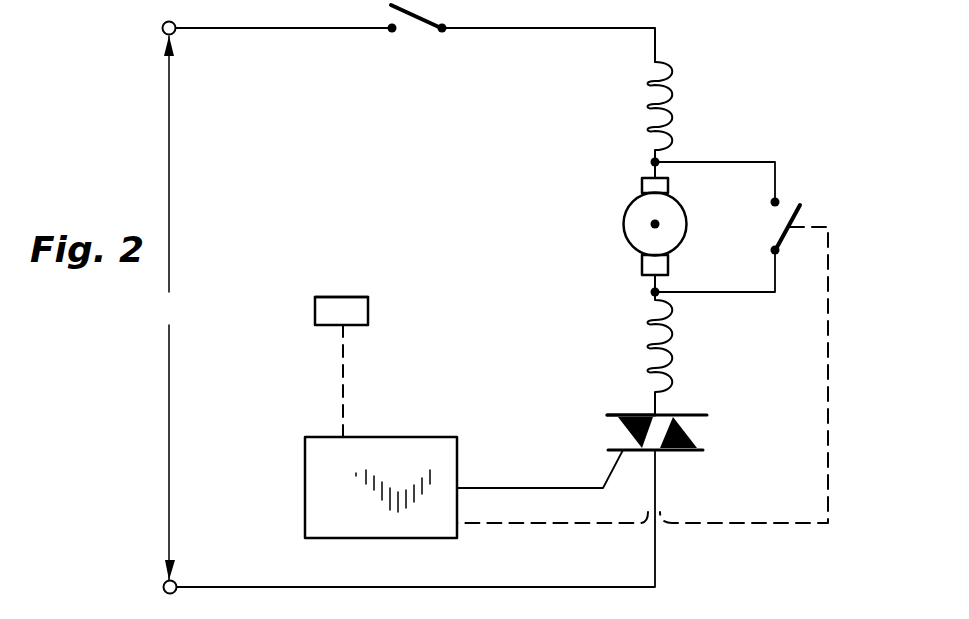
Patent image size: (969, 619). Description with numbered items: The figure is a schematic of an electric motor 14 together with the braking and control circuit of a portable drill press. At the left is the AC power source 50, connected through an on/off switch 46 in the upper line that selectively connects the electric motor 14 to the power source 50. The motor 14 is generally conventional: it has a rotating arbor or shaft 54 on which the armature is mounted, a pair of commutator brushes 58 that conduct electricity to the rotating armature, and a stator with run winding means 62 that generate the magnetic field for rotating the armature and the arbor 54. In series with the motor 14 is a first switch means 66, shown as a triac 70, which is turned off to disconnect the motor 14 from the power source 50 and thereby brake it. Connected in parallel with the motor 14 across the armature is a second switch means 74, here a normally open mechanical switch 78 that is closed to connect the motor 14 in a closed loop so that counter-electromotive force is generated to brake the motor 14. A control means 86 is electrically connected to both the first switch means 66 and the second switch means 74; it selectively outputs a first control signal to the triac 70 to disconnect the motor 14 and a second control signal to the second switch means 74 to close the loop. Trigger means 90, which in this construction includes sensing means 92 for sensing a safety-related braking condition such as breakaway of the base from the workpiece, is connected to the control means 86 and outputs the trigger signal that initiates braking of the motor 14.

The electric motor 14 is at (627, 240).
The on/off switch 46 is at (420, 27).
The power source 50 is at (190, 308).
The arbor or shaft 54 is at (651, 224).
The commutator brushes 58 is at (646, 182).
The run winding means 62 is at (671, 94).
The first switch means 66 is at (708, 432).
The triac 70 is at (640, 414).
The second switch means 74 is at (752, 262).
The mechanical switch 78 is at (802, 198).
The control means 86 is at (415, 437).
The trigger means 90 is at (358, 285).
The sensing means 92 is at (368, 310).